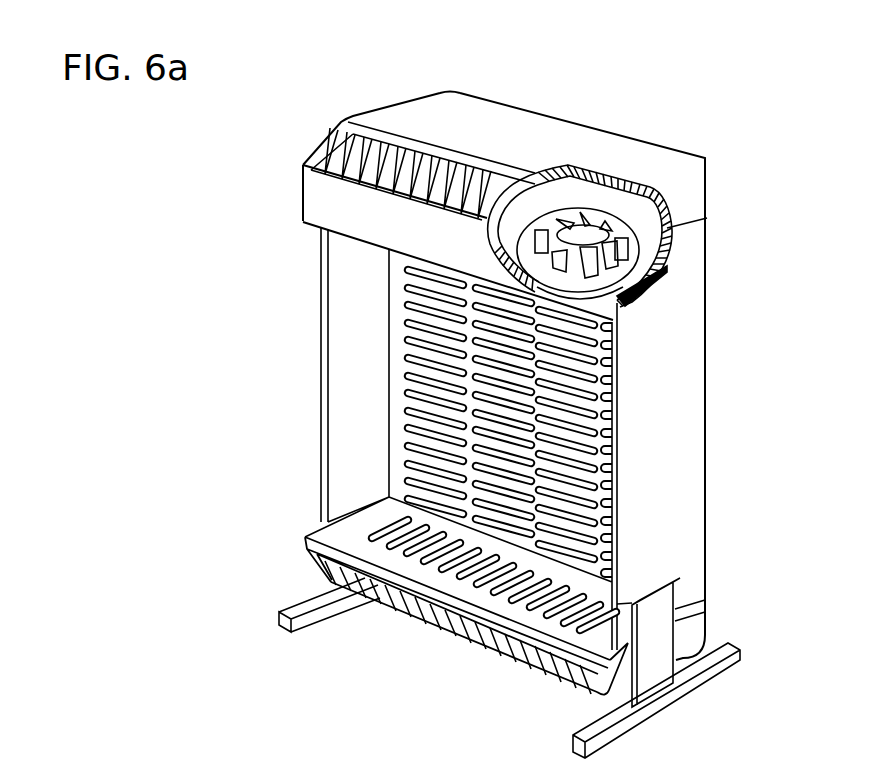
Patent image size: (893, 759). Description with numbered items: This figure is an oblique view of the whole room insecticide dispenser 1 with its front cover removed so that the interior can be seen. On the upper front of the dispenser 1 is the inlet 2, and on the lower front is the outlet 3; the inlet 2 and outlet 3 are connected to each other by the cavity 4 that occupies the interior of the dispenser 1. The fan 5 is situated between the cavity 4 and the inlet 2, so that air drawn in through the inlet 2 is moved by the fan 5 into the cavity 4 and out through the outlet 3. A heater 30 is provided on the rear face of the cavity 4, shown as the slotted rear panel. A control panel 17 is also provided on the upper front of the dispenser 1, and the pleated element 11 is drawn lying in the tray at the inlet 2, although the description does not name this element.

The room insecticide dispenser 1 is at (718, 172).
The inlet 2 is at (349, 118).
The outlet 3 is at (433, 614).
The cavity 4 is at (373, 368).
The fan 5 is at (581, 232).
The pleated filter 11 is at (399, 143).
The control panel 17 is at (343, 217).
The heater 30 is at (573, 433).